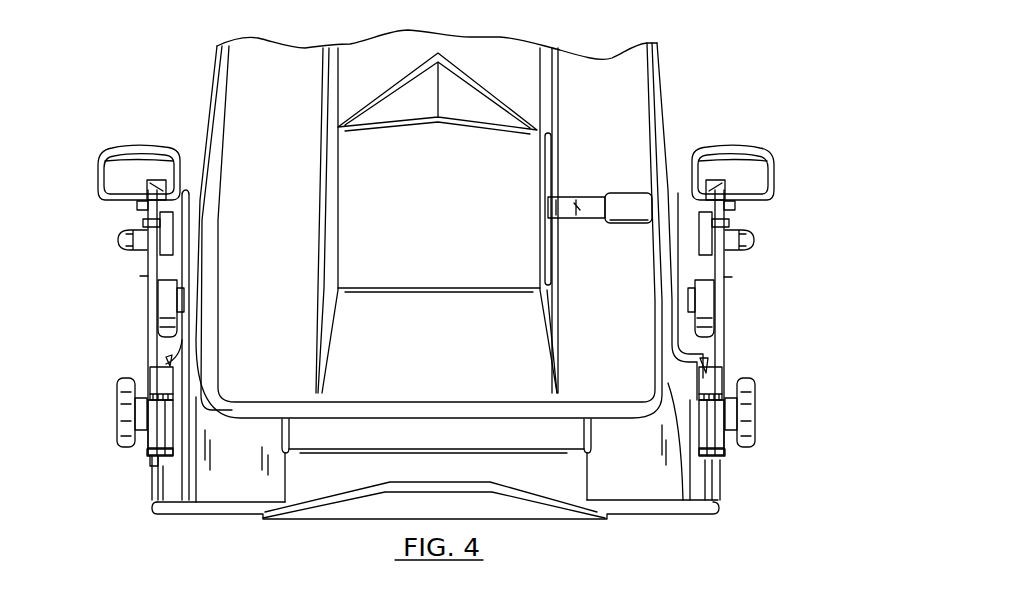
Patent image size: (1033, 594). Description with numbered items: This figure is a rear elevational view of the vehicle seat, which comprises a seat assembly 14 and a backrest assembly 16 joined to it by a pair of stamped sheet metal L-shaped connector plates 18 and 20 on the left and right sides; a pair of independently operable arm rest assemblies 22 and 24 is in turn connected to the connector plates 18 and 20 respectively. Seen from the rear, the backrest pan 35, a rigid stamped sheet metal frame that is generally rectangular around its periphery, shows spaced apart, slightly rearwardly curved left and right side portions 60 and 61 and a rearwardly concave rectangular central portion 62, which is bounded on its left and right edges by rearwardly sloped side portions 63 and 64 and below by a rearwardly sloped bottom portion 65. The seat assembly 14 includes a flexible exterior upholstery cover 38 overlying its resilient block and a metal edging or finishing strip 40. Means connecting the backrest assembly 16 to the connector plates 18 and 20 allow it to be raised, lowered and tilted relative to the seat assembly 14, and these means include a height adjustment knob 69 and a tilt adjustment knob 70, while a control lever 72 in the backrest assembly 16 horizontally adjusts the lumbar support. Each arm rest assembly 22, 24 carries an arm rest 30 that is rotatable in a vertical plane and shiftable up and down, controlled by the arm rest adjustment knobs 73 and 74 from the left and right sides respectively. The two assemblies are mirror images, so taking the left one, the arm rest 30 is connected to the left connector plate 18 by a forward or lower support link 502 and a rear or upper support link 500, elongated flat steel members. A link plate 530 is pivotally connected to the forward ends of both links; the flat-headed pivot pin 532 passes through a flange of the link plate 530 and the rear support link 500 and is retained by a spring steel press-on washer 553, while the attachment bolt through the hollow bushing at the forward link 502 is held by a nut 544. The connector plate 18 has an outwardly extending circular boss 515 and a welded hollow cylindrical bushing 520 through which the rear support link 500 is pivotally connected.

The seat assembly 14 is at (698, 482).
The backrest assembly 16 is at (670, 87).
The left connector plate 18 is at (180, 350).
The right connector plate 20 is at (693, 352).
The left arm rest assembly 22 is at (134, 276).
The right arm rest assembly 24 is at (742, 277).
The arm rest 30 is at (141, 147).
The backrest pan 35 is at (628, 66).
The exterior upholstery cover 38 is at (157, 470).
The edging strip 40 is at (718, 509).
The left side portion 60 is at (275, 189).
The right side portion 61 is at (619, 135).
The central portion 62 is at (456, 162).
The left sloped side portion 63 is at (328, 112).
The right sloped side portion 64 is at (548, 107).
The bottom portion 65 is at (445, 335).
The height adjustment knob 69 is at (715, 317).
The tilt adjustment knob 70 is at (162, 312).
The control lever 72 is at (582, 197).
The left arm rest adjustment knob 73 is at (117, 417).
The right arm rest adjustment knob 74 is at (755, 408).
The rear arm support link 500 is at (148, 262).
The forward arm support link 502 is at (147, 453).
The circular boss 515 is at (157, 458).
The hollow cylindrical bushing 520 is at (150, 382).
The link plate 530 is at (147, 223).
The pivot pin 532 is at (139, 205).
The nut 544 is at (118, 240).
The press-on washer 553 is at (147, 182).